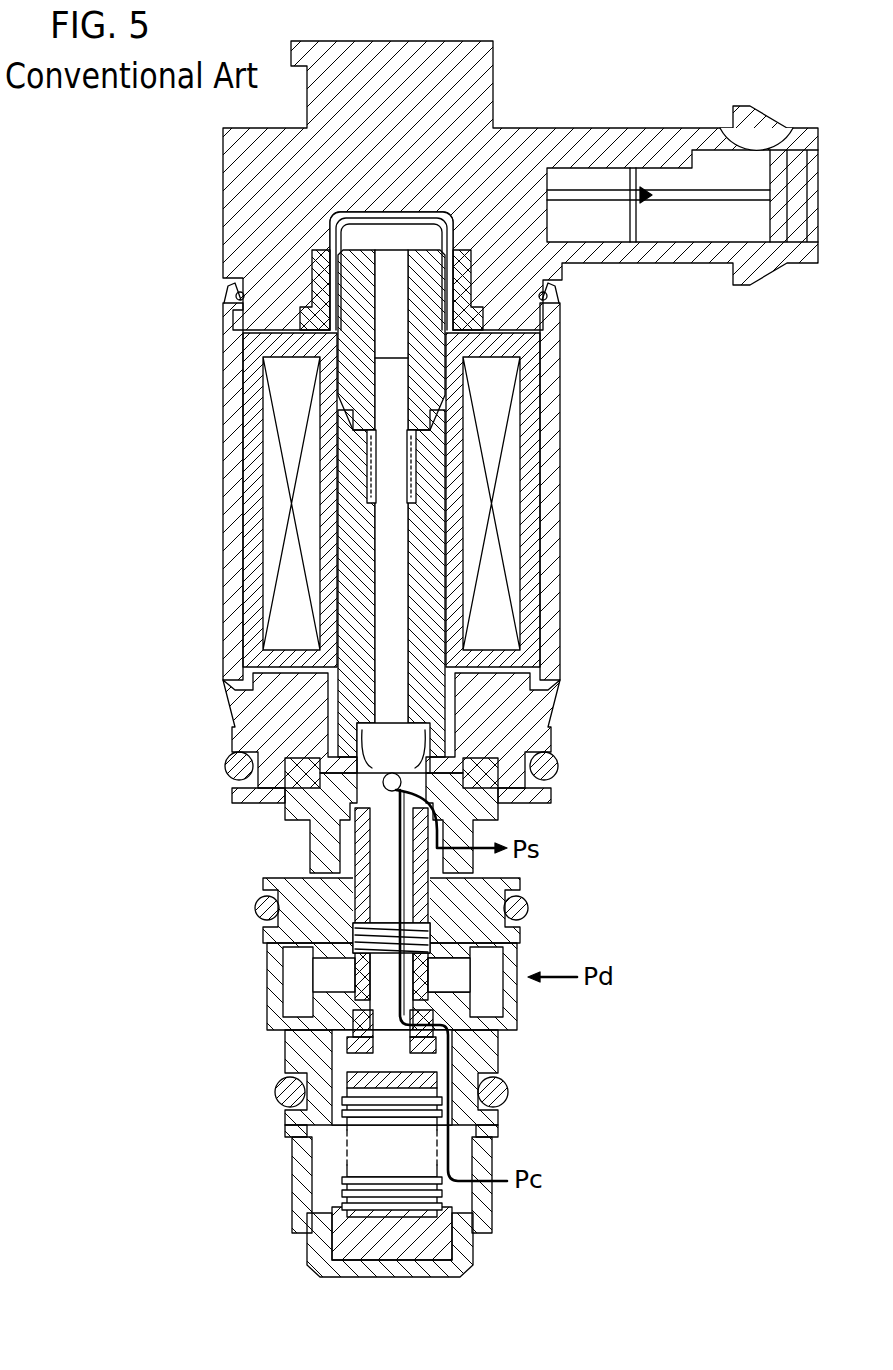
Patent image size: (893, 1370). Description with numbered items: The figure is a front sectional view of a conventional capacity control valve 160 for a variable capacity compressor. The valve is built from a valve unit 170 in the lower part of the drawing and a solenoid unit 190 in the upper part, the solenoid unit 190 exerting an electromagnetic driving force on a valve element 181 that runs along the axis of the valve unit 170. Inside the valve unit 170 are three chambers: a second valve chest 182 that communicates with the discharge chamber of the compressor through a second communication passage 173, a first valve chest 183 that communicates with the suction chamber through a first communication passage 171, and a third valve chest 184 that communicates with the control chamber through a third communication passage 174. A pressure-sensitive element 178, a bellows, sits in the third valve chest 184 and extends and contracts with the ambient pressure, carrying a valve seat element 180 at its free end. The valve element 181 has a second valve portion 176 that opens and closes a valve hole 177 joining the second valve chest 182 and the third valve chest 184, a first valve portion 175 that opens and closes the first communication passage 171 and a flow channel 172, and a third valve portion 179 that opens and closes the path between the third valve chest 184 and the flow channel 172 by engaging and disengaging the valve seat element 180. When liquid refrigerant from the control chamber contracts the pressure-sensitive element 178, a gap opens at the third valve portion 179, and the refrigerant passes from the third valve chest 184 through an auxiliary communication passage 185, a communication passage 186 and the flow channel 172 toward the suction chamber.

The capacity control valve 160 is at (680, 408).
The valve unit 170 is at (563, 915).
The first communication passage 171 is at (463, 835).
The flow channel 172 is at (383, 850).
The second communication passage 173 is at (518, 993).
The third communication passage 174 is at (463, 1202).
The first valve portion 175 is at (303, 820).
The second valve portion 176 is at (480, 1000).
The valve hole 177 is at (353, 1022).
The pressure-sensitive element 178 is at (347, 1115).
The third valve portion 179 is at (352, 1047).
The valve seat element 180 is at (287, 1093).
The valve element 181 is at (347, 887).
The second valve chest 182 is at (455, 963).
The first valve chest 183 is at (450, 875).
The third valve chest 184 is at (337, 1193).
The auxiliary communication passage 185 is at (505, 1077).
The communication passage 186 is at (385, 985).
The solenoid unit 190 is at (208, 428).